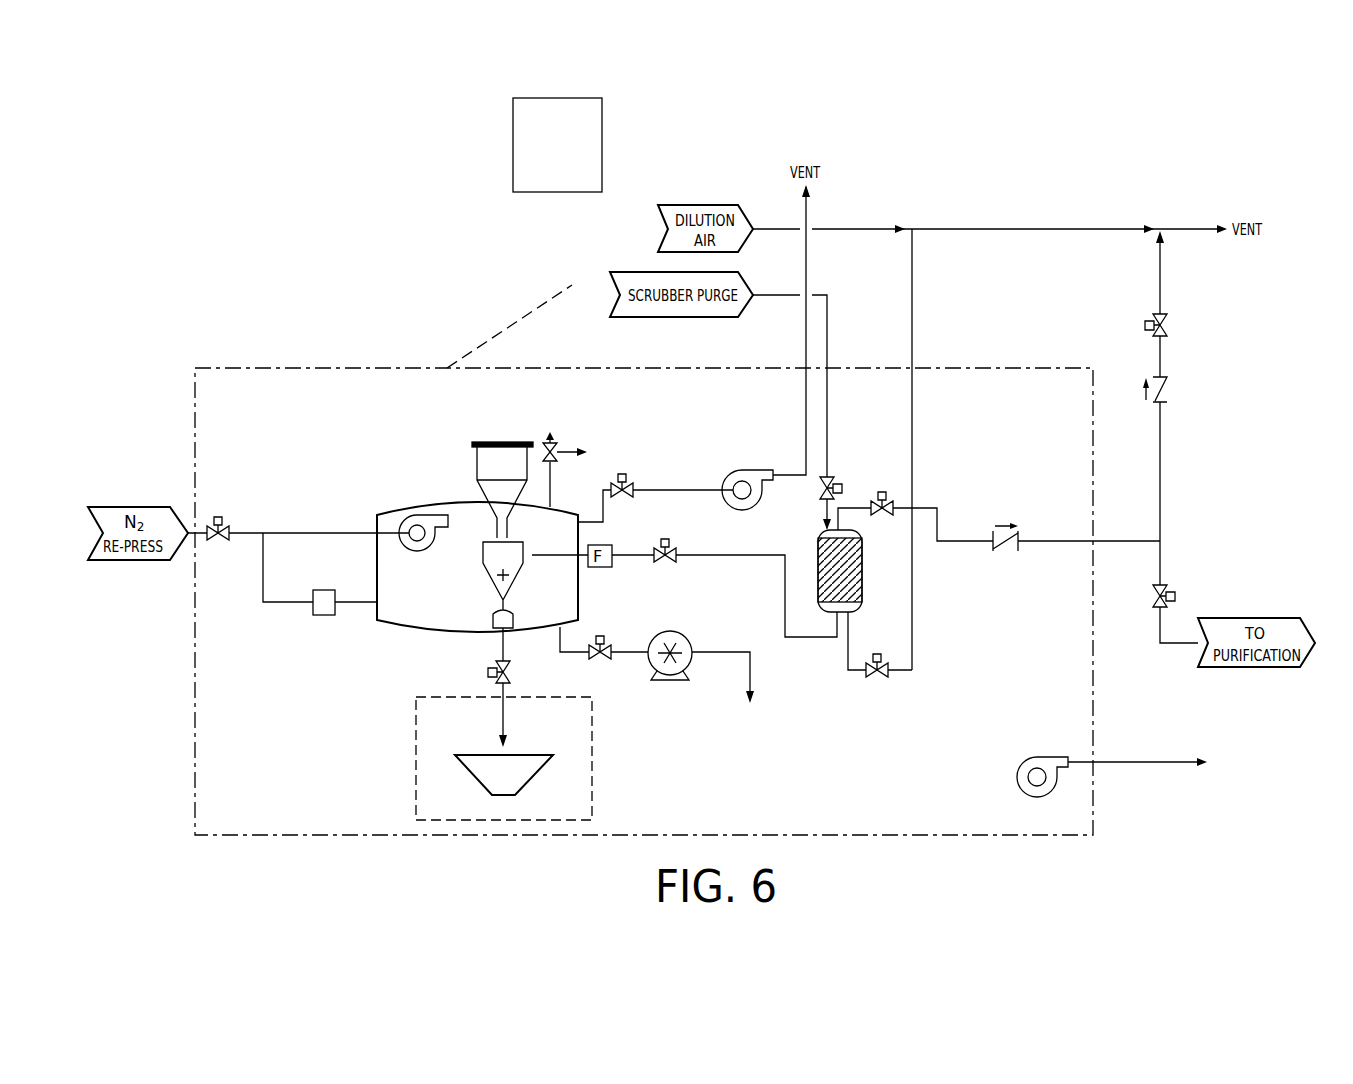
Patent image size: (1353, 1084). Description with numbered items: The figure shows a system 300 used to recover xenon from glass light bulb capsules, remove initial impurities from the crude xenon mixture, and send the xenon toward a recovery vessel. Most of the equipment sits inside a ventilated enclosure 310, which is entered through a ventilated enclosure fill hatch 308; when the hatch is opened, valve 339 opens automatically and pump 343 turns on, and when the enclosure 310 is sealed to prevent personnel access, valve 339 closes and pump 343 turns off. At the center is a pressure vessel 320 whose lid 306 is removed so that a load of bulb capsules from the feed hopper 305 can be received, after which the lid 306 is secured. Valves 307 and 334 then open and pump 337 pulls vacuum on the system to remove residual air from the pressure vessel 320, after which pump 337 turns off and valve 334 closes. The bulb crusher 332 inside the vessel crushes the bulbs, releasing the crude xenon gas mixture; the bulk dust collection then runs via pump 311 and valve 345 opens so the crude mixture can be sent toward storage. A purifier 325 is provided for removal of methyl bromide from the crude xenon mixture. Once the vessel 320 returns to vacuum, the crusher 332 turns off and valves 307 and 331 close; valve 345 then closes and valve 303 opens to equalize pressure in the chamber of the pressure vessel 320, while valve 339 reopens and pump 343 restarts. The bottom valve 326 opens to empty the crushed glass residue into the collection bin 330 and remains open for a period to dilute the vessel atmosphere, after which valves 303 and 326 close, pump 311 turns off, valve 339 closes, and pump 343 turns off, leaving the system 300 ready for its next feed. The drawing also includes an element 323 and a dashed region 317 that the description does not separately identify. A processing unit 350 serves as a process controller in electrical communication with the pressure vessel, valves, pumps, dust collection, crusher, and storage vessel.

The system 300 is at (1030, 166).
The valve 303 is at (218, 540).
The feed hopper 305 is at (477, 472).
The lid 306 is at (498, 443).
The valve 307 is at (669, 540).
The ventilated enclosure fill hatch 308 is at (512, 322).
The ventilated enclosure 310 is at (644, 601).
The pump 311 is at (424, 546).
The collection area 317 is at (518, 758).
The pressure vessel 320 is at (392, 512).
The scrubber 323 is at (840, 568).
The purifier 325 is at (324, 615).
The bottom valve 326 is at (511, 673).
The collection bin 330 is at (525, 783).
The valve 331 is at (882, 492).
The bulb crusher 332 is at (512, 562).
The valve 334 is at (600, 636).
The pump 337 is at (672, 631).
The valve 339 is at (622, 474).
The pump 343 is at (745, 470).
The valve 345 is at (1175, 592).
The processing unit 350 is at (557, 145).